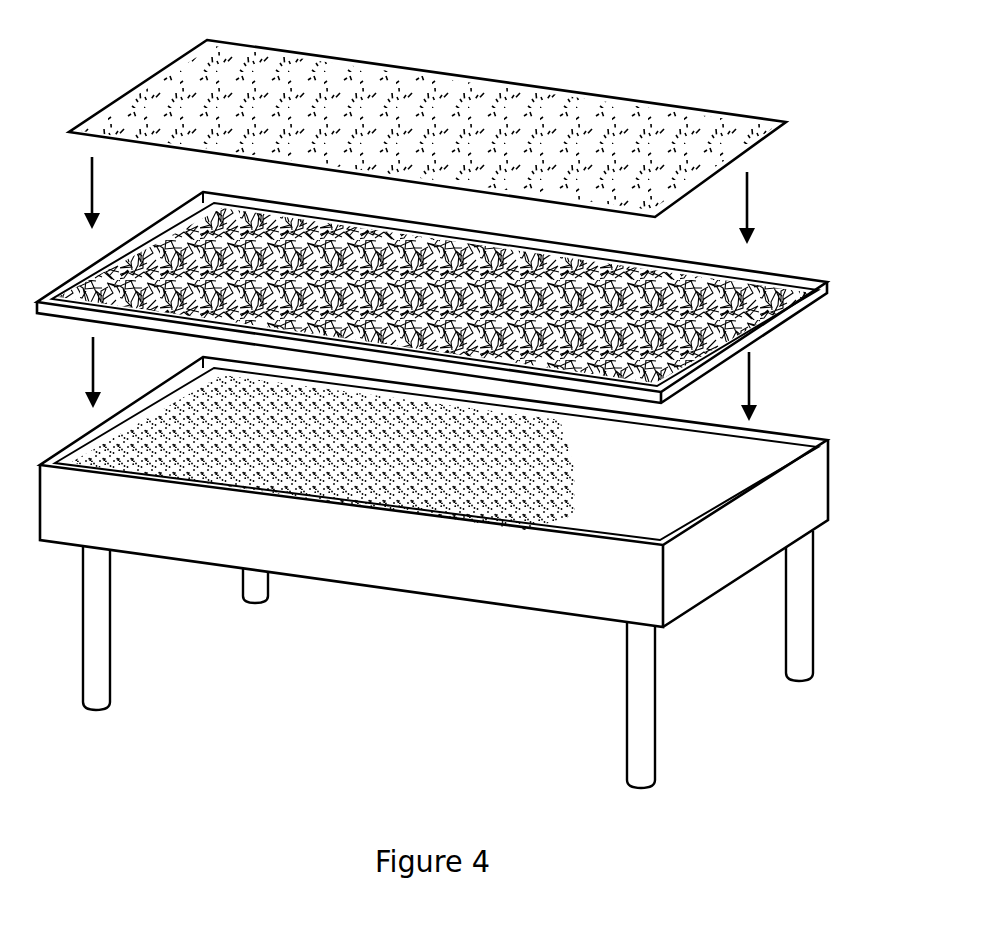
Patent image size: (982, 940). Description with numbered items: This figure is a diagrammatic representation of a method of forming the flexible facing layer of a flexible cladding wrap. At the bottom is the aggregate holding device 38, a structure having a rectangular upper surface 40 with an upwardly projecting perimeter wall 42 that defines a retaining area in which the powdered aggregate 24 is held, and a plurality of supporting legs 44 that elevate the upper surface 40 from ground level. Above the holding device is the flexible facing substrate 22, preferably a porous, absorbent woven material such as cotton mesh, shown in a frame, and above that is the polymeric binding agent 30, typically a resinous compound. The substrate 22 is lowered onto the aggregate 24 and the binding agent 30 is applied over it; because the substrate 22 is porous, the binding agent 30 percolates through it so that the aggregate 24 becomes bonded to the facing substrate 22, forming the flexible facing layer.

The polymeric binding agent 30 is at (176, 77).
The flexible facing substrate 22 is at (122, 276).
The powdered aggregate 24 is at (158, 458).
The aggregate holding device 38 is at (424, 572).
The rectangular upper surface 40 is at (422, 524).
The upwardly projecting perimeter wall 42 is at (487, 538).
The supporting legs 44 is at (104, 642).